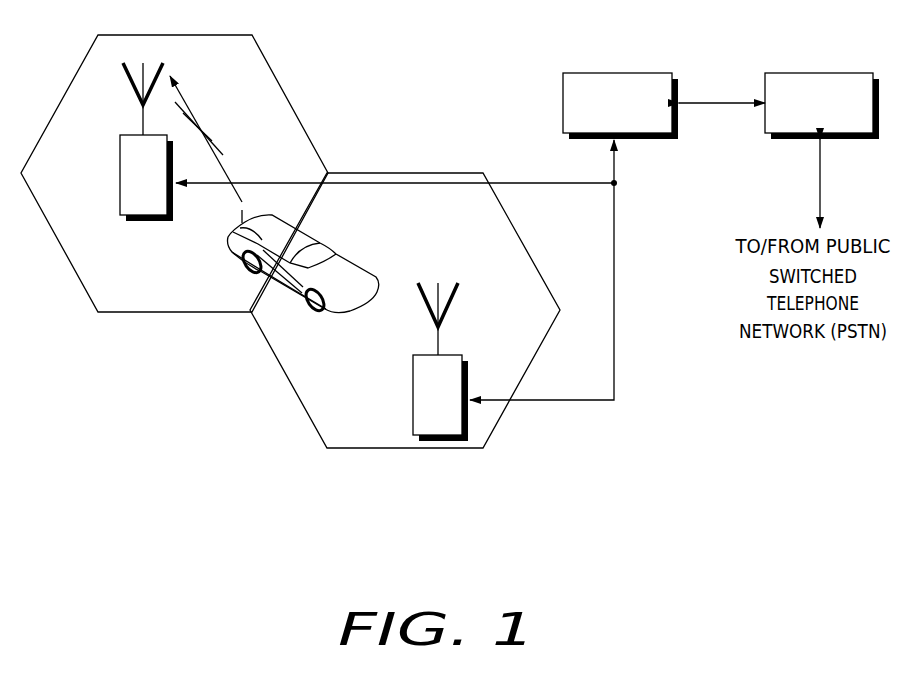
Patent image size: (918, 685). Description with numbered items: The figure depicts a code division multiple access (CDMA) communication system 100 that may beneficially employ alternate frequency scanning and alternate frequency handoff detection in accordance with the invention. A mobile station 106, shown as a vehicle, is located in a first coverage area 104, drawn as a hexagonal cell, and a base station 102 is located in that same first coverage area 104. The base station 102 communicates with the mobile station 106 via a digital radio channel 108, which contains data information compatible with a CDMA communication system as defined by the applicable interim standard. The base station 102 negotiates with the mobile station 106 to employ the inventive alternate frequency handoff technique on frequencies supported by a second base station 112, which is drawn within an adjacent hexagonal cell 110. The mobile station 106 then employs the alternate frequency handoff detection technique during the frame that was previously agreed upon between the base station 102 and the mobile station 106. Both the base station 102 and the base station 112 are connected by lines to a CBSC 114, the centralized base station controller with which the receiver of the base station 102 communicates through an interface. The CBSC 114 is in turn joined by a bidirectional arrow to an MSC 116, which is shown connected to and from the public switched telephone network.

The CDMA communication system 100 is at (475, 70).
The base station 102 is at (120, 172).
The first coverage area 104 is at (152, 298).
The mobile station 106 is at (340, 260).
The digital radio channel 108 is at (205, 127).
The second cell 110 is at (377, 435).
The base station 112 is at (422, 368).
The CBSC 114 is at (620, 73).
The mobile switching center (MSC) 116 is at (827, 73).